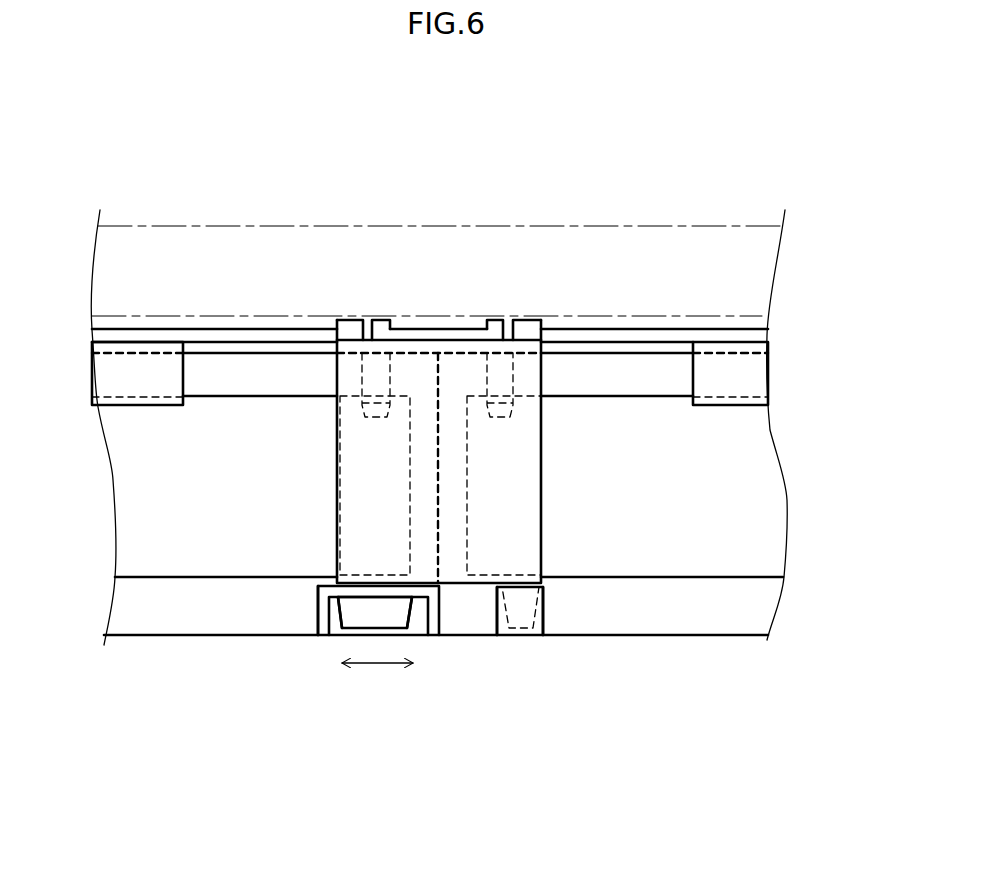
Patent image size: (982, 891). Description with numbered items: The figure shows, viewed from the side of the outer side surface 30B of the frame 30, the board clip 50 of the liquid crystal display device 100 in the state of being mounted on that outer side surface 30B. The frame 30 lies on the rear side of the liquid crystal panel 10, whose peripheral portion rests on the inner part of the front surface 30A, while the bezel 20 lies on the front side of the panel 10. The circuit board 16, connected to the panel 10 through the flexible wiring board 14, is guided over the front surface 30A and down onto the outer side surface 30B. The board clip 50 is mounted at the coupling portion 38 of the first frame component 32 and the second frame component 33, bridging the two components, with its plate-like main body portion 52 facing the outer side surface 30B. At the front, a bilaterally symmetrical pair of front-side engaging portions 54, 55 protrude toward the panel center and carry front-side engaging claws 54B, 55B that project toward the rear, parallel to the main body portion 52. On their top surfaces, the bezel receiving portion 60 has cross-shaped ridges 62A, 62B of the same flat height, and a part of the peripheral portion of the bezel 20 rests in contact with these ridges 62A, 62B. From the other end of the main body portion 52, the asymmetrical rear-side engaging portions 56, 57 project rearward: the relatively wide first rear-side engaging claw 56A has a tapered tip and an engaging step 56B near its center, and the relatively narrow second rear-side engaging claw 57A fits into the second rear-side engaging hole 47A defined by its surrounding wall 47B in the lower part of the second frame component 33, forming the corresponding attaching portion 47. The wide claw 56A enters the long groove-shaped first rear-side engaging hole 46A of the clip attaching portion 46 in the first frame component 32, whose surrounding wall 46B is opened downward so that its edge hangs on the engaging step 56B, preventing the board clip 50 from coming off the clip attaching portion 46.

The liquid crystal display device 100 is at (822, 109).
The liquid crystal panel 10 is at (740, 326).
The flexible wiring board 14 is at (110, 377).
The circuit board 16 is at (148, 517).
The bezel 20 is at (185, 222).
The frame 30 is at (191, 647).
The front surface 30A is at (258, 353).
The outer side surface 30B is at (180, 612).
The first frame component 32 is at (137, 639).
The second frame component 33 is at (741, 640).
The coupling portion 38 is at (440, 377).
The clip attaching portion 46 is at (338, 667).
The first rear-side engaging hole 46A is at (314, 607).
The surrounding wall 46B is at (428, 590).
The wiring layer 47 is at (606, 670).
The second rear-side engaging hole 47A is at (544, 576).
The surrounding wall 47B is at (497, 612).
The board clip 50 is at (463, 371).
The main body portion 52 is at (530, 462).
The front-side engaging portion 54 is at (316, 464).
The front-side engaging claw 54B is at (360, 375).
The front-side engaging portion 55 is at (586, 464).
The front-side engaging claw 55B is at (516, 375).
The first rear-side engaging portion 56 is at (399, 685).
The first rear-side engaging claw 56A is at (400, 605).
The engaging step 56B is at (357, 602).
The second rear-side engaging portion 57 is at (583, 684).
The second rear-side engaging claw 57A is at (527, 590).
The bezel receiving portion 60 is at (476, 250).
The ridge 62A is at (347, 317).
The ridge 62B is at (527, 317).